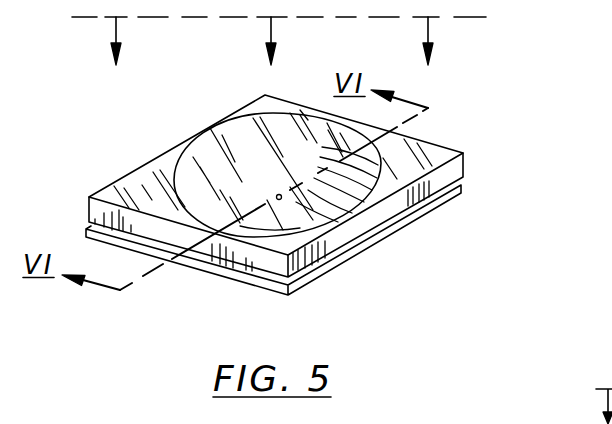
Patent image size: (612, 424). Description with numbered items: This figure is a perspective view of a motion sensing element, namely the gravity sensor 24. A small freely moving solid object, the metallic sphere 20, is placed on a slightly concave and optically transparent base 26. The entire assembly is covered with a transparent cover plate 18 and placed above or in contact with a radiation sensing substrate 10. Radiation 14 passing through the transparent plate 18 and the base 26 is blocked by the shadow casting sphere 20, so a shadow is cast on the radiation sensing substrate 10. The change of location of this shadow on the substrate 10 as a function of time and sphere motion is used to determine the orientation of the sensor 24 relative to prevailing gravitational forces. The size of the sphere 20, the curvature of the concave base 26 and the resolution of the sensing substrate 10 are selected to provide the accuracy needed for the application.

The radiation sensing substrate 10 is at (392, 232).
The radiation 14 is at (474, 21).
The transparent cover plate 18 is at (88, 197).
The metallic sphere 20 is at (278, 195).
The gravity sensor 24 is at (471, 135).
The concave base 26 is at (192, 178).